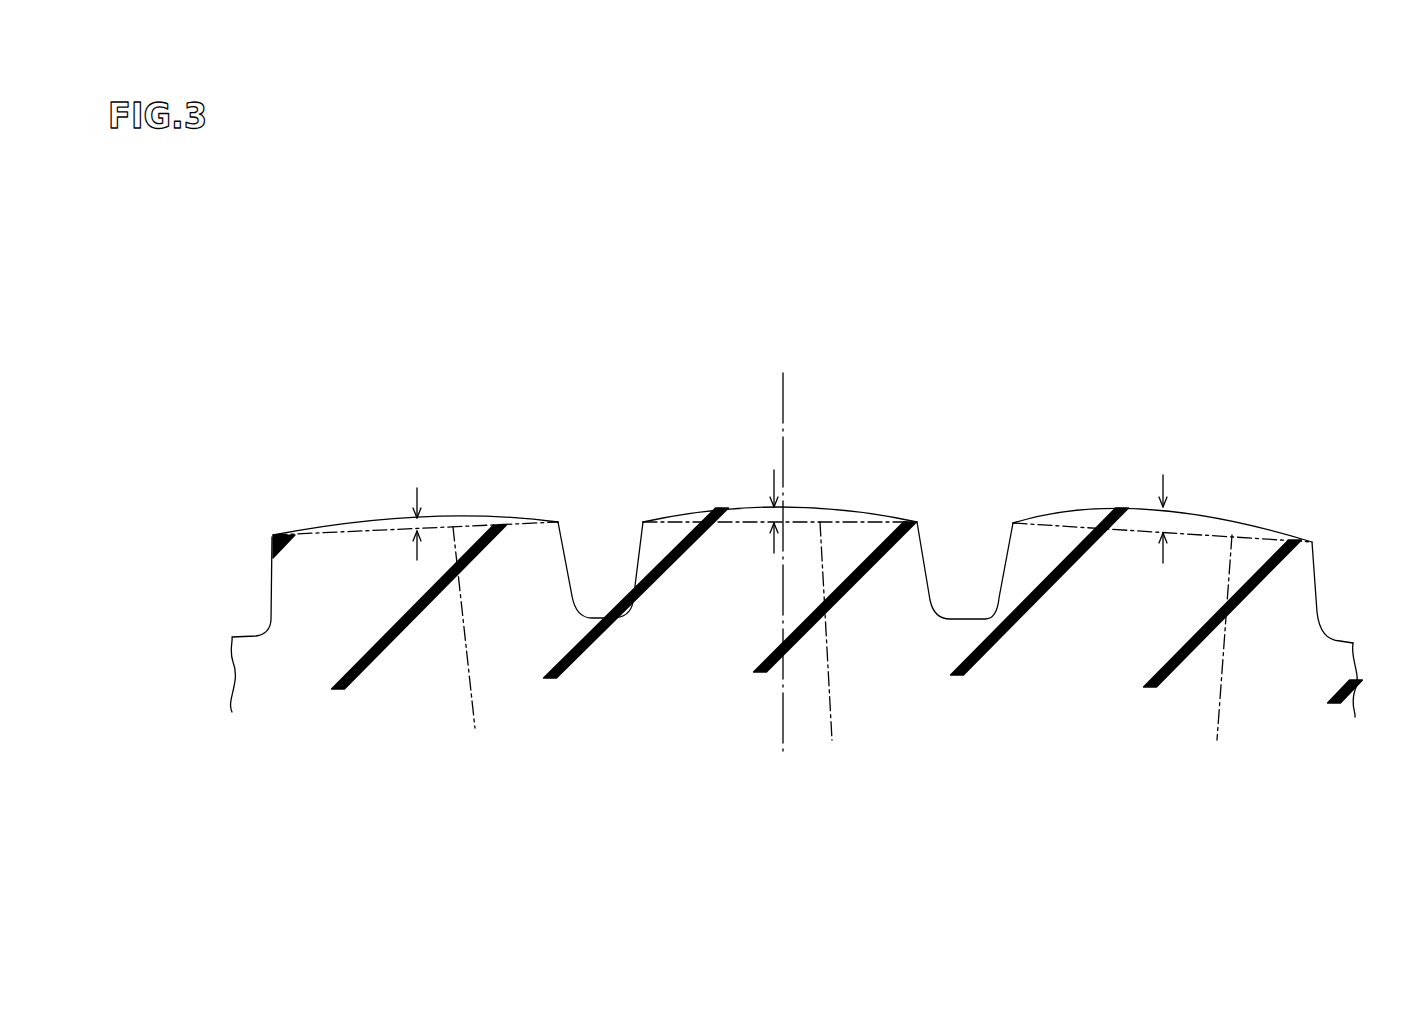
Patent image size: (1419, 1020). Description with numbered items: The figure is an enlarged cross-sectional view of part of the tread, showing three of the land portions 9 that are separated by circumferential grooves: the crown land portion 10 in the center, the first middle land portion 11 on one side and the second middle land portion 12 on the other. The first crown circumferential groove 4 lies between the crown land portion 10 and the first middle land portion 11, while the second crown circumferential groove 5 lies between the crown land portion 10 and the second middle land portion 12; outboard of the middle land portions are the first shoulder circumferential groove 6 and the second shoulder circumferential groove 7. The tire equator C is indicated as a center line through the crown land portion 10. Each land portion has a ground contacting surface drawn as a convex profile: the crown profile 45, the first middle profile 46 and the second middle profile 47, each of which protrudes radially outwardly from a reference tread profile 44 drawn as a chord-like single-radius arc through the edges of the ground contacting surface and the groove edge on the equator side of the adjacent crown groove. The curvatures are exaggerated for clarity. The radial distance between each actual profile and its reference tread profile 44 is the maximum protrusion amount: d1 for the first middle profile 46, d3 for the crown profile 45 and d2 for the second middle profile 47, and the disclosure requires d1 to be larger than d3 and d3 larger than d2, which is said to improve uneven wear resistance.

The first crown circumferential groove 4 is at (967, 547).
The second crown circumferential groove 5 is at (599, 545).
The first shoulder circumferential groove 6 is at (1342, 618).
The second shoulder circumferential groove 7 is at (248, 613).
The land portions 9 is at (310, 520).
The crown land portion 10 is at (719, 500).
The first middle land portion 11 is at (1098, 495).
The second middle land portion 12 is at (383, 520).
The reference tread profile 44 is at (843, 649).
The crown profile 45 is at (862, 508).
The first middle profile 46 is at (1243, 517).
The second middle profile 47 is at (490, 517).
The tire equator C is at (783, 549).
The maximum protrusion amount of the first middle profile d1 is at (1163, 522).
The maximum protrusion amount of the second middle profile d2 is at (423, 523).
The maximum protrusion amount of the crown profile d3 is at (780, 507).